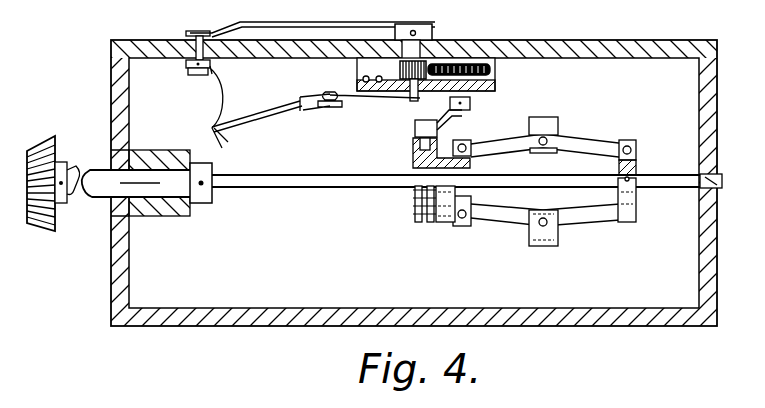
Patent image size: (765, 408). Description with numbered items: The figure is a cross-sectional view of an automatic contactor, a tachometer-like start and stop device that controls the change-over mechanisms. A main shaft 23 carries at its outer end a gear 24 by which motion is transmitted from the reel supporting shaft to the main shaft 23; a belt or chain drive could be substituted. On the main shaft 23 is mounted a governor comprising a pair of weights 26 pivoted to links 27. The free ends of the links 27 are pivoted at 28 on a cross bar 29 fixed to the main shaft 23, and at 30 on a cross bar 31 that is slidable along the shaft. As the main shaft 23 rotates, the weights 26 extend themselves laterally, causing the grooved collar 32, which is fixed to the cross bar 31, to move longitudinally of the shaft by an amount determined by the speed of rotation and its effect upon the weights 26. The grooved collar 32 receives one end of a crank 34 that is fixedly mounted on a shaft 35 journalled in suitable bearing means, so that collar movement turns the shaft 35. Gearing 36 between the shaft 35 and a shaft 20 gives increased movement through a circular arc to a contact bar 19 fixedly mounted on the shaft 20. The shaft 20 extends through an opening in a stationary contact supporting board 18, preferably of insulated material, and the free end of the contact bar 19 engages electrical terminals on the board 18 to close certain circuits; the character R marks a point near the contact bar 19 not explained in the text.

The stationary electrical contact supporting board 18 is at (549, 46).
The contact bar 19 is at (372, 27).
The shaft 20 is at (426, 65).
The gearing 36 is at (470, 68).
The shaft 35 is at (472, 104).
The crank 34 is at (446, 120).
The pivot 30 is at (467, 147).
The weights 26 is at (546, 122).
The links 27 is at (589, 141).
The pivot 28 is at (637, 149).
The cross bar 29 is at (637, 190).
The main shaft 23 is at (367, 186).
The grooved collar 32 is at (415, 210).
The cross bar 31 is at (447, 216).
The gear 24 is at (43, 223).
The adjusting screw R is at (199, 32).